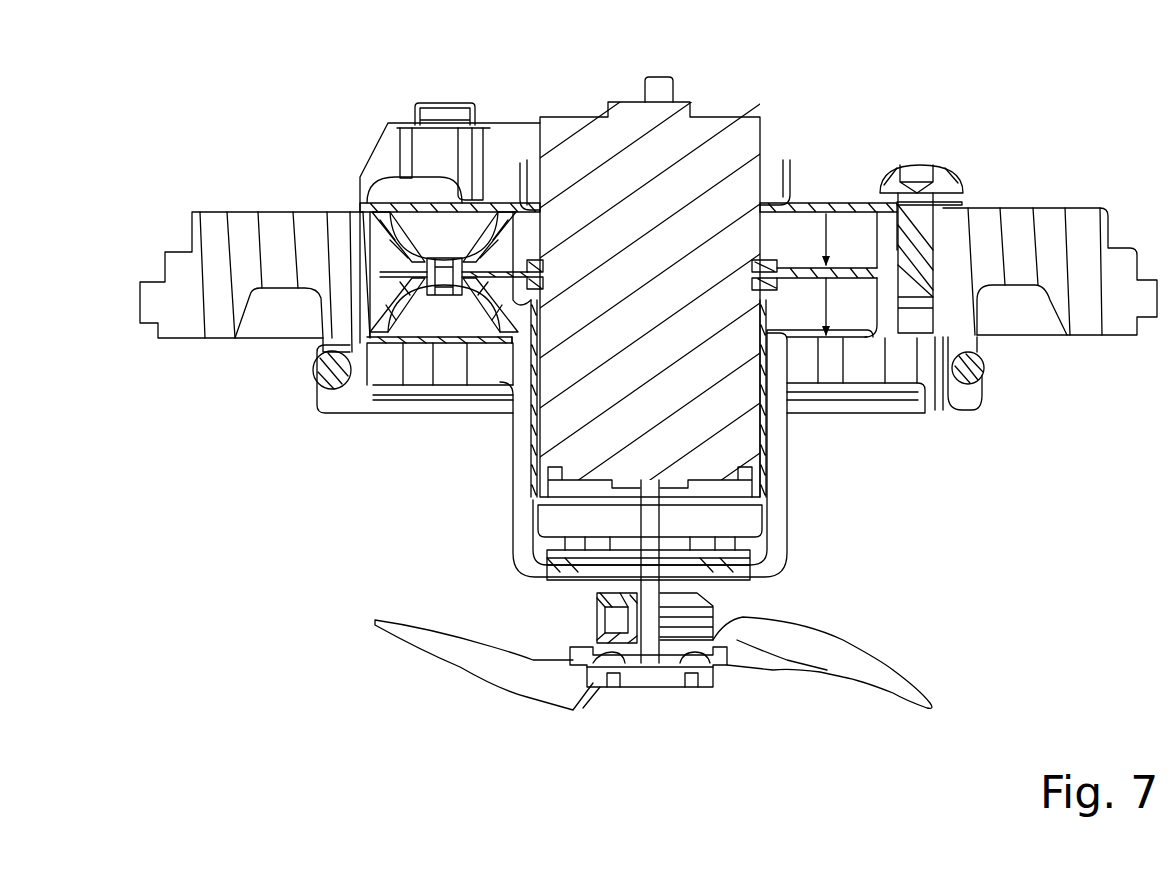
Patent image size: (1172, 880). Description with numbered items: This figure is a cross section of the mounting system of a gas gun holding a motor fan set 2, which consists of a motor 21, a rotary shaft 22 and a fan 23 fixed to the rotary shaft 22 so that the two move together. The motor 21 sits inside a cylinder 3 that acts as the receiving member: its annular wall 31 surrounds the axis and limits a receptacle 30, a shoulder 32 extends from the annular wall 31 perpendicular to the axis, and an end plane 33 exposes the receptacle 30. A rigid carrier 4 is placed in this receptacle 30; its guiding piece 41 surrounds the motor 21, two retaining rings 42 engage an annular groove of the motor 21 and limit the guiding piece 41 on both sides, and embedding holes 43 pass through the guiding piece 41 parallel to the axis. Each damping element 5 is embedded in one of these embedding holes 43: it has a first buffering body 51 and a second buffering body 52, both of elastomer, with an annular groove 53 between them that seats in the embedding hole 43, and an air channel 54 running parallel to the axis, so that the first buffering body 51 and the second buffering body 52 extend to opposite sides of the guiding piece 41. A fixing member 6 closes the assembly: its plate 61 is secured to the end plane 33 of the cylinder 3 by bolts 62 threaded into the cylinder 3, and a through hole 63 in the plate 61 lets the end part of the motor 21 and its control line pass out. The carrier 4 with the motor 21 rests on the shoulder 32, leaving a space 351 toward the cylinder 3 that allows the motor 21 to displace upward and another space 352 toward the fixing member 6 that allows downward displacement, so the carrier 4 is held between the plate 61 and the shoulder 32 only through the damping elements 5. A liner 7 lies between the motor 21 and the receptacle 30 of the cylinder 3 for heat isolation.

The motor fan set 2 is at (728, 108).
The motor 21 is at (573, 116).
The rotary shaft 22 is at (650, 630).
The fan 23 is at (823, 680).
The cylinder 3 is at (648, 270).
The receptacle 30 is at (530, 473).
The annular wall 31 is at (343, 303).
The shoulder 32 is at (450, 377).
The end plane 33 is at (990, 207).
The space 351 is at (835, 240).
The space 352 is at (836, 285).
The rigid carrier 4 is at (655, 330).
The guiding piece 41 is at (800, 285).
The retaining ring 42 is at (780, 276).
The embedding hole 43 is at (518, 205).
The damping element 5 is at (411, 269).
The first buffering body 51 is at (383, 240).
The second buffering body 52 is at (413, 300).
The annular groove 53 is at (431, 258).
The air channel 54 is at (468, 258).
The fixing member 6 is at (864, 267).
The plate 61 is at (866, 330).
The bolt 62 is at (958, 165).
The through hole 63 is at (776, 175).
The liner 7 is at (775, 462).